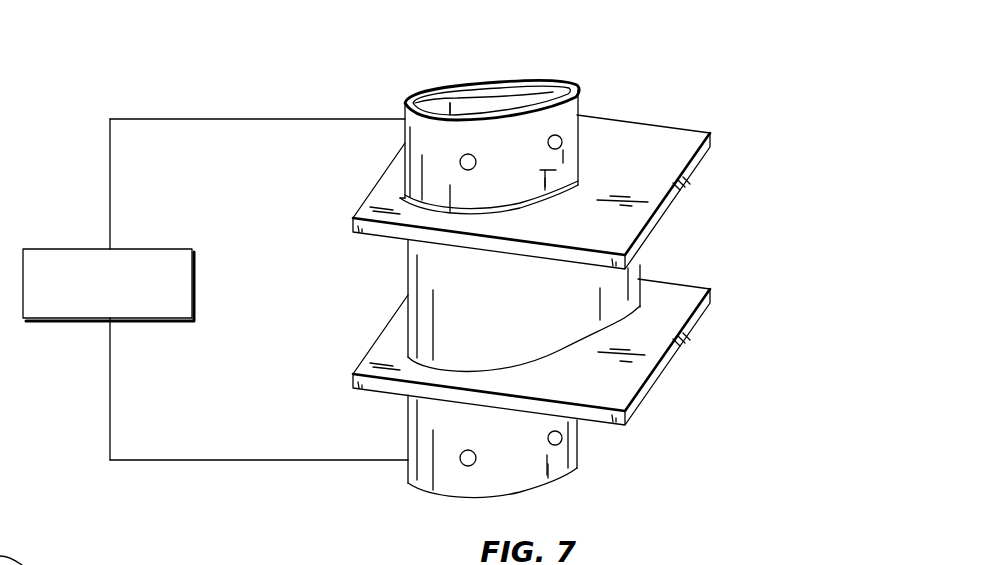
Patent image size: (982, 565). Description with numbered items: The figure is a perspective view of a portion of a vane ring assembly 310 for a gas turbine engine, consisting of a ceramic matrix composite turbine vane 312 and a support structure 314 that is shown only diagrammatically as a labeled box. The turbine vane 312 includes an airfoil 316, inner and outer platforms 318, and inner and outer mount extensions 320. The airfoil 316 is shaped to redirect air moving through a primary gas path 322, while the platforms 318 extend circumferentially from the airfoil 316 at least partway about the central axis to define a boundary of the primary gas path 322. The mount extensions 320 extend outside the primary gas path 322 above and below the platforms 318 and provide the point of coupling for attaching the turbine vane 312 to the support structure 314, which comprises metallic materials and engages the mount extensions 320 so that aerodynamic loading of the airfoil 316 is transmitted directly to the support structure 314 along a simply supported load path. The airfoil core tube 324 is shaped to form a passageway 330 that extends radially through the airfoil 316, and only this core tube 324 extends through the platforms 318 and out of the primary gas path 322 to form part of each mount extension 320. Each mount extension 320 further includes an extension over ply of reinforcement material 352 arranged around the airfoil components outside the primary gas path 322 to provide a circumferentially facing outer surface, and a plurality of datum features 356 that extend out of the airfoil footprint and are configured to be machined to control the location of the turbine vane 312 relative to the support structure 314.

The vane ring assembly 310 is at (735, 100).
The turbine vane 312 is at (742, 147).
The support structure 314 is at (63, 249).
The airfoil 316 is at (642, 267).
The inner and outer platforms 318 is at (700, 170).
The inner and outer mount extensions 320 is at (579, 97).
The primary gas path 322 is at (329, 319).
The airfoil core tube 324 is at (565, 85).
The passageway 330 is at (487, 110).
The extension over ply of reinforcement material 352 is at (536, 173).
The datum features 356 is at (548, 143).